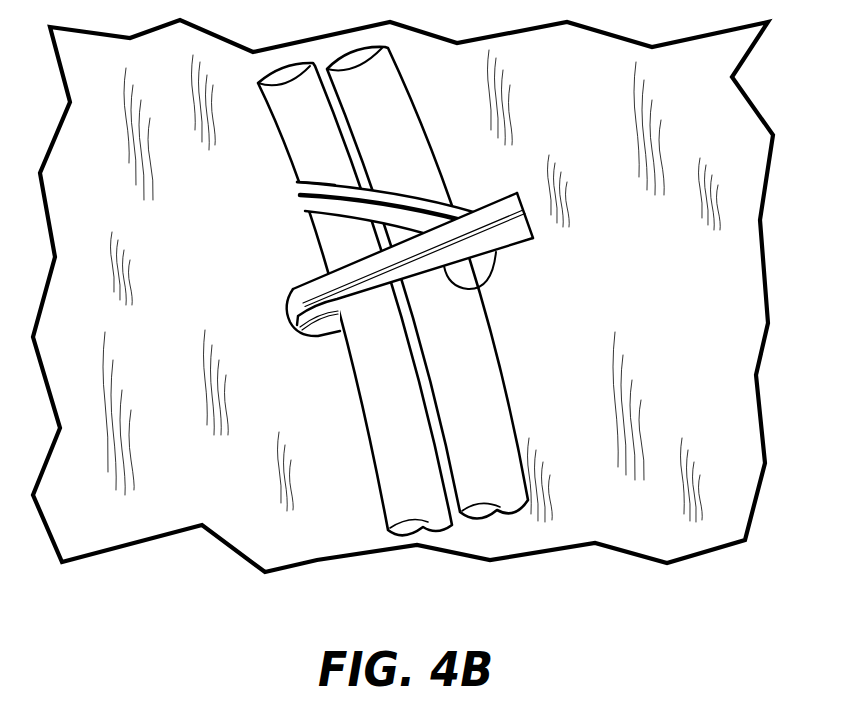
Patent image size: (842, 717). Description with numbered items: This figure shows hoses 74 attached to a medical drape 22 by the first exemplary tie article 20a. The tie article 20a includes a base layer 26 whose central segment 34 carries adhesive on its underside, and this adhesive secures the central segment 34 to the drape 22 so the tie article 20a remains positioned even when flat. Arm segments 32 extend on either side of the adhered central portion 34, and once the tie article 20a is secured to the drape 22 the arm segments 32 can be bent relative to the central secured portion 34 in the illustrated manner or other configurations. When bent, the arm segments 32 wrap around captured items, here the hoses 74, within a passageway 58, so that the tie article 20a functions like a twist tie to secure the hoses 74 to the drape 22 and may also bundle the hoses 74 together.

The tie article 20a is at (437, 144).
The medical drape 22 is at (170, 341).
The base layer 26 is at (421, 283).
The arm segments 32 is at (336, 178).
The central segment 34 is at (324, 348).
The passageway 58 is at (472, 288).
The hoses 74 is at (428, 291).